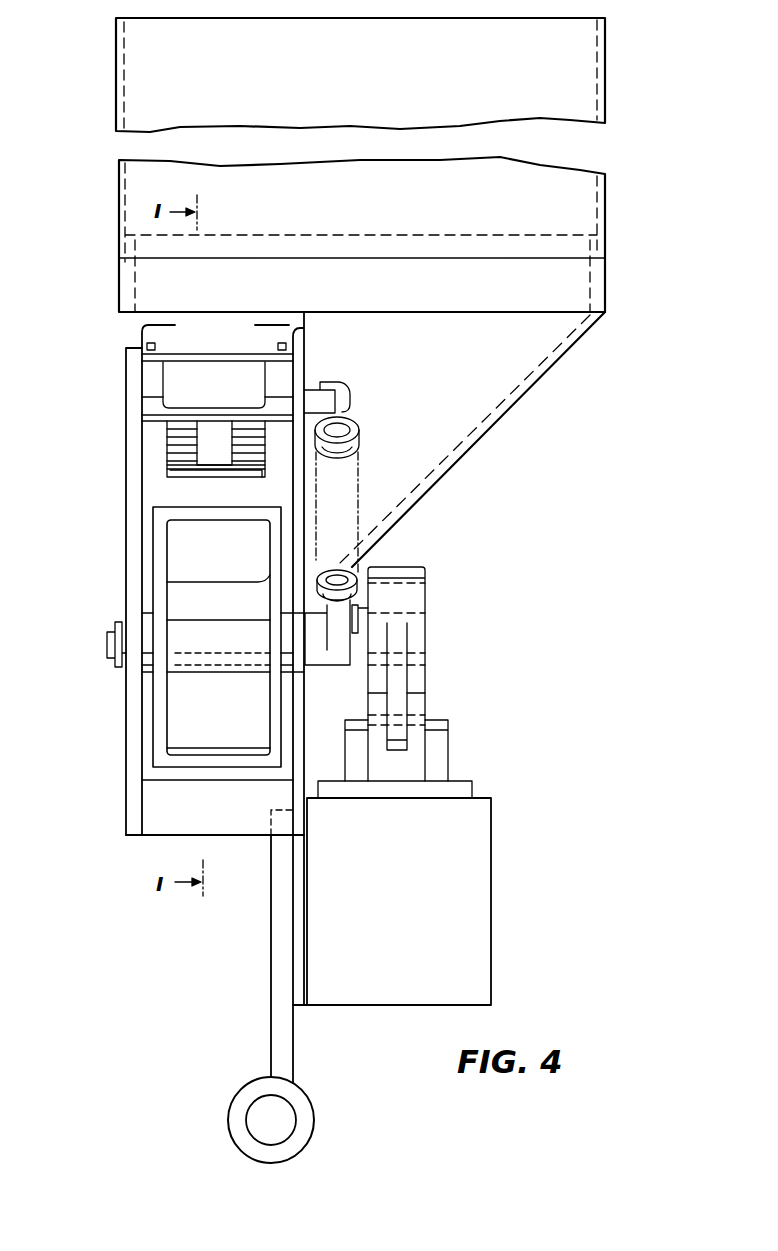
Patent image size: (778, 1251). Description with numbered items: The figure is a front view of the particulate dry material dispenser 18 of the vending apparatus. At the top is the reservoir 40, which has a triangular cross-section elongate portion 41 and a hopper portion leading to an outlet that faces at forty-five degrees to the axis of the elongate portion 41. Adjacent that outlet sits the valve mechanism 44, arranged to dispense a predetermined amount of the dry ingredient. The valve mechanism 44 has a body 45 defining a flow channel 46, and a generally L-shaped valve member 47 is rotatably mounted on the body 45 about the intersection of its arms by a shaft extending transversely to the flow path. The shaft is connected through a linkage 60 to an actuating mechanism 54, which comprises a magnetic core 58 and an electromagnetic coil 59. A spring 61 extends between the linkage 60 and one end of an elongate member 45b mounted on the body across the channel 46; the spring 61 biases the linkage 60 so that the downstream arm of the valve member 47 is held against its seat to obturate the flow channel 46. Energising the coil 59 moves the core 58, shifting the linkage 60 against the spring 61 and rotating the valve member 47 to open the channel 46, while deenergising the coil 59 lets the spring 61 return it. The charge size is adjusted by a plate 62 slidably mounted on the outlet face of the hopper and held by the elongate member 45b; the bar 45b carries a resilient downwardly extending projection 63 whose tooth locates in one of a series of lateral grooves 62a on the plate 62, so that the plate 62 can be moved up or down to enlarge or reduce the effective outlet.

The reservoir 40 is at (115, 305).
The elongate portion 41 is at (605, 240).
The particulate dry material dispenser 18 is at (553, 373).
The valve mechanism 44 is at (123, 700).
The body 45 is at (133, 820).
The elongate member 45b is at (145, 420).
The flow channel 46 is at (145, 800).
The valve member 47 is at (160, 738).
The actuating mechanism 54 is at (475, 737).
The magnetic core 58 is at (427, 703).
The electromagnetic coil 59 is at (480, 885).
The linkage 60 is at (338, 672).
The spring 61 is at (360, 422).
The plate 62 is at (160, 492).
The lateral grooves 62a is at (175, 467).
The projection 63 is at (205, 435).